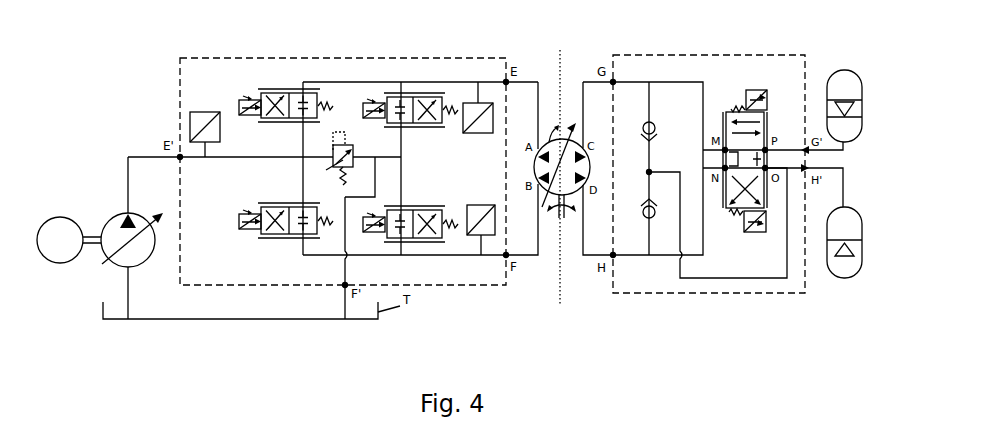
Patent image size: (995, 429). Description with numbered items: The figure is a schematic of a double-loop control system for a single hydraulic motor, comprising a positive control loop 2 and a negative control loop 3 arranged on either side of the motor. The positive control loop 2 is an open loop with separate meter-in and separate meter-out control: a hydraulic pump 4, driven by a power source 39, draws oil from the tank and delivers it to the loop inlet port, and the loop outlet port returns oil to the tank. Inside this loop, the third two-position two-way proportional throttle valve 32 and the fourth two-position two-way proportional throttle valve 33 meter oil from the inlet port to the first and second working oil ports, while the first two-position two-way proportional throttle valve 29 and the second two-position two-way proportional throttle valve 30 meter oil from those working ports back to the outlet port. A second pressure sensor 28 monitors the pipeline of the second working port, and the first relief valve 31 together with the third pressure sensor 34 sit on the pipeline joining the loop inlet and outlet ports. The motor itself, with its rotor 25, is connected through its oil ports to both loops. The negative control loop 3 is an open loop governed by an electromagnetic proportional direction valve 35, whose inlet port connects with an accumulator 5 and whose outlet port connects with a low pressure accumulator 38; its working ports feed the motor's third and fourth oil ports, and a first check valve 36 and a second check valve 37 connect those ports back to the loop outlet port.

The positive control loop 2 is at (177, 86).
The negative control loop 3 is at (619, 295).
The hydraulic pump 4 is at (115, 232).
The accumulator 5 is at (844, 77).
The rotor 25 is at (480, 134).
The second pressure sensor 28 is at (484, 205).
The first two-position two-way proportional throttle valve 29 is at (442, 104).
The second two-position two-way proportional throttle valve 30 is at (436, 209).
The first relief valve 31 is at (332, 168).
The third two-position two-way proportional throttle valve 32 is at (268, 90).
The fourth two-position two-way proportional throttle valve 33 is at (270, 205).
The third pressure sensor 34 is at (207, 111).
The electromagnetic proportional direction valve 35 is at (758, 90).
The first check valve 36 is at (645, 123).
The second check valve 37 is at (645, 218).
The low pressure accumulator 38 is at (843, 277).
The power source 39 is at (58, 232).